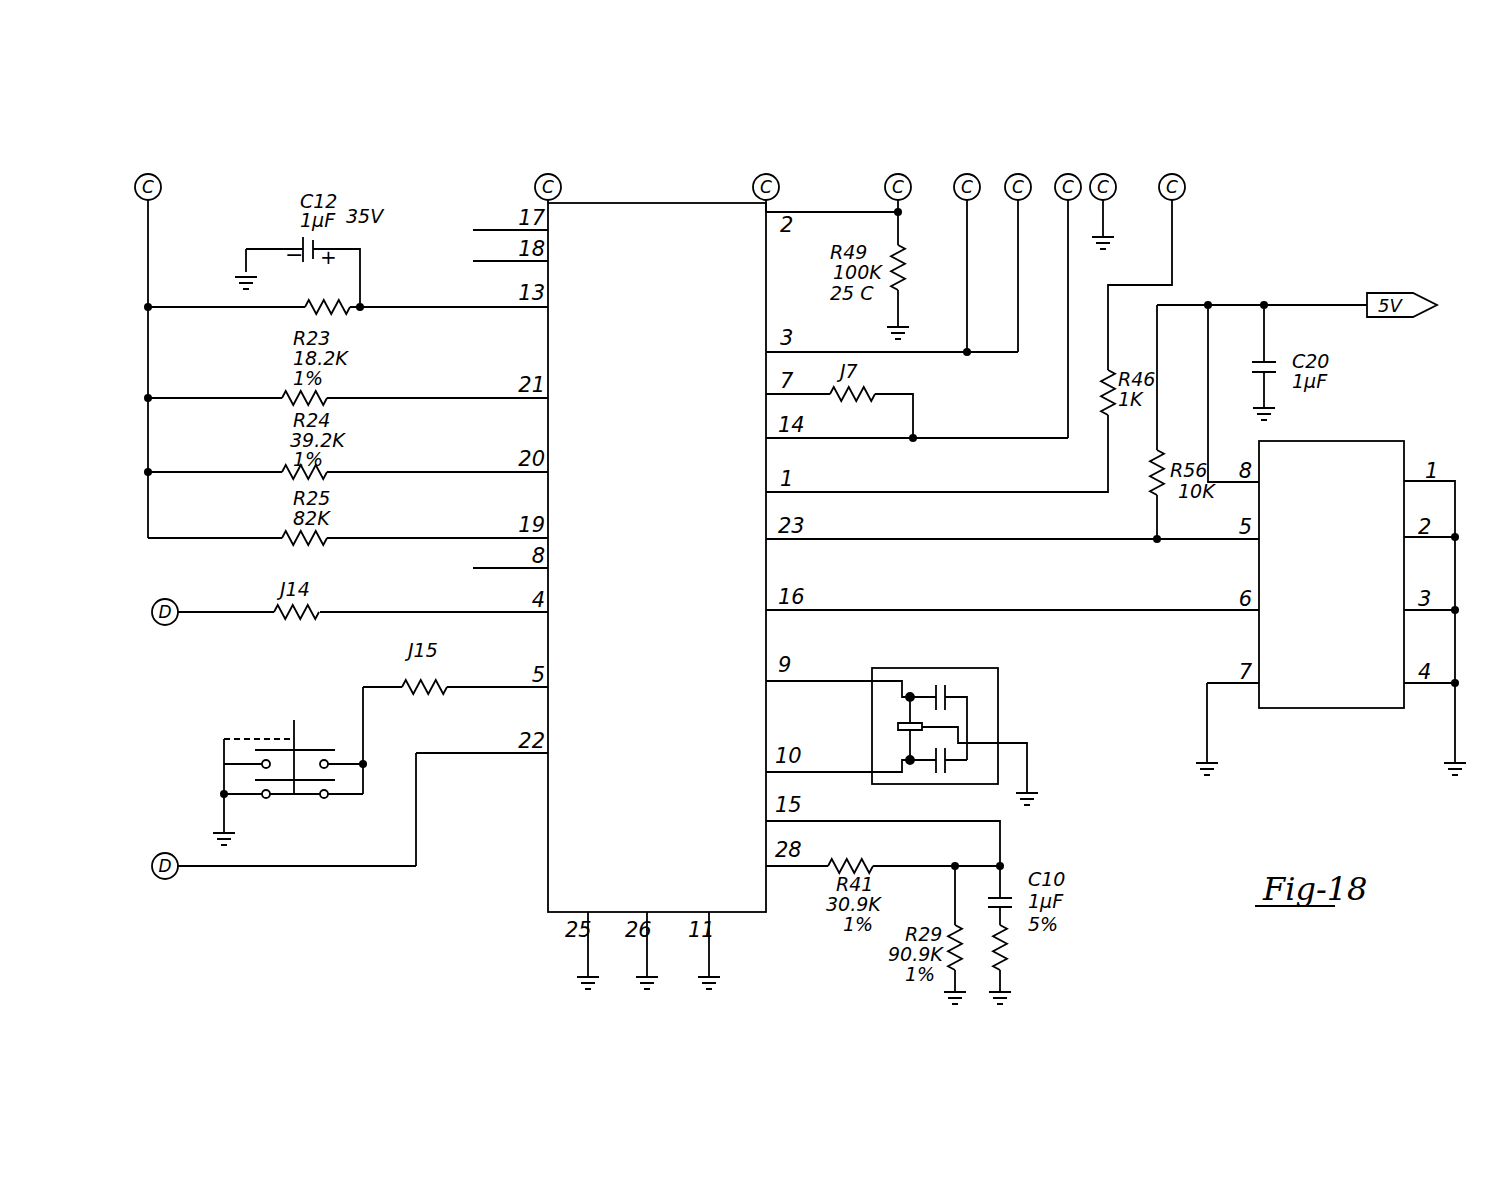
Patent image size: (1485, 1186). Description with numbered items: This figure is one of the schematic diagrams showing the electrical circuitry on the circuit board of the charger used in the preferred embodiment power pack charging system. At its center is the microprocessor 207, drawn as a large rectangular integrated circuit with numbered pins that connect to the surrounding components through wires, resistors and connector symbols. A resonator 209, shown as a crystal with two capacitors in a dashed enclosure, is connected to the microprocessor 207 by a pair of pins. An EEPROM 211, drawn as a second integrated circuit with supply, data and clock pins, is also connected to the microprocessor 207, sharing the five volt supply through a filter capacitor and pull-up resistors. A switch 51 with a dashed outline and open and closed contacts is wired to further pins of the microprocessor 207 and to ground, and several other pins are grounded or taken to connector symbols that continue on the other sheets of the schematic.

The microprocessor 207 is at (641, 501).
The resonator 209 is at (1010, 698).
The EEPROM 211 is at (1360, 440).
The switch 51 is at (288, 779).